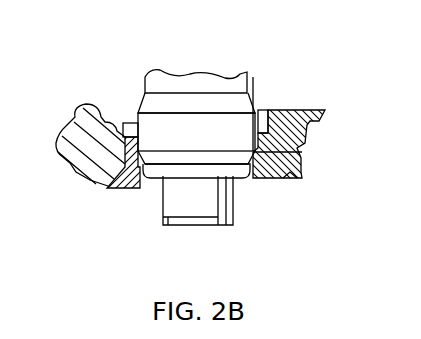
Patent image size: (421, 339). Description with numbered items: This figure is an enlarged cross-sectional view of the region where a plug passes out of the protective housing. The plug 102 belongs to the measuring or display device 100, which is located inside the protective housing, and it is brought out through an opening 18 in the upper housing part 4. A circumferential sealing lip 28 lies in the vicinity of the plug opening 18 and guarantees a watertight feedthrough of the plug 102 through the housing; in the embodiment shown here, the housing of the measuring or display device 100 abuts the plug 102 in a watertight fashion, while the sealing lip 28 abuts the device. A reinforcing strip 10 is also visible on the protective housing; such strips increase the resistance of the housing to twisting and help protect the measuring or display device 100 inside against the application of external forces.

The reinforcing strip 10 is at (90, 103).
The opening 18 is at (168, 102).
The plug 102 is at (237, 76).
The upper housing part 4 is at (288, 137).
The sealing lip 28 is at (113, 186).
The measuring or display device 100 is at (284, 178).